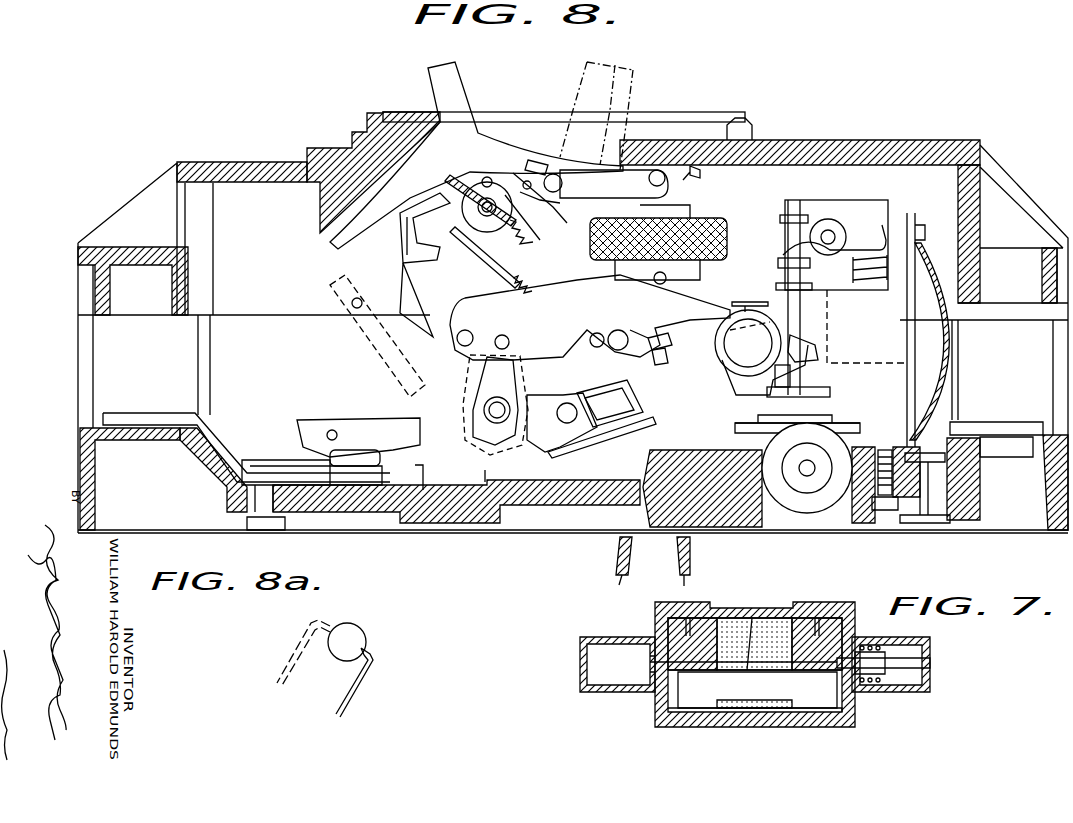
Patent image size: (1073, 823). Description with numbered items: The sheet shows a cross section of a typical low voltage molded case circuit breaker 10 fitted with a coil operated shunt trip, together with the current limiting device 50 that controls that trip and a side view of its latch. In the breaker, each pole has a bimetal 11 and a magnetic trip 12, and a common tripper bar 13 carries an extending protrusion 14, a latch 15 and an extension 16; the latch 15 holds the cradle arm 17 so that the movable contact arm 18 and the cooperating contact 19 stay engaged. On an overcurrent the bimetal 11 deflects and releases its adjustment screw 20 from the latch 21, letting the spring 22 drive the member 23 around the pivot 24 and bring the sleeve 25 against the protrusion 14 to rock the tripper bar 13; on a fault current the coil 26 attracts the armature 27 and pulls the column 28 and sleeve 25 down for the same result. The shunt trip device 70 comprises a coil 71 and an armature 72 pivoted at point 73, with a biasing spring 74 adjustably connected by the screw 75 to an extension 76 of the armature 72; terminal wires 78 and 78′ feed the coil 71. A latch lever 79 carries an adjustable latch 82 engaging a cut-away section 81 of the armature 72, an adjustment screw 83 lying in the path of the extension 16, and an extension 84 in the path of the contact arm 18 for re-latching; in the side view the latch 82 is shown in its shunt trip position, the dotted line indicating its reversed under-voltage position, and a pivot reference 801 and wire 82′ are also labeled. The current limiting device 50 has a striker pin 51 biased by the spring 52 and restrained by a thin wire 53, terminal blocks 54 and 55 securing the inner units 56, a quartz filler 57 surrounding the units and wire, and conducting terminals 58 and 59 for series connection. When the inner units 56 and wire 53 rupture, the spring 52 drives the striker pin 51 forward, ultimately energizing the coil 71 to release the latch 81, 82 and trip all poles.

In FIG. 8, the molded case circuit breaker 10 is at (352, 118).
In FIG. 8, the bimetal 11 is at (908, 331).
In FIG. 8, the magnetic trip 12 is at (806, 408).
In FIG. 8, the common tripper bar 13 is at (760, 318).
In FIG. 8, the extending protrusion 14 is at (815, 347).
In FIG. 8, the latch 15 is at (740, 301).
In FIG. 8, the extension 16 is at (678, 345).
In FIG. 8, the cradle arm 17 is at (690, 302).
In FIG. 8, the movable contact arm 18 is at (350, 428).
In FIG. 8, the cooperating contact 19 is at (372, 457).
In FIG. 8, the adjustment screw 20 is at (909, 224).
In FIG. 8, the latch 21 is at (836, 240).
In FIG. 8, the spring 22 is at (872, 283).
In FIG. 8, the member 23 is at (862, 240).
In FIG. 8, the pivot 24 is at (832, 230).
In FIG. 8, the sleeve 25 is at (810, 321).
In FIG. 8, the coil 26 is at (811, 508).
In FIG. 8, the armature 27 is at (822, 393).
In FIG. 8, the column 28 is at (791, 368).
In FIG. 8, the shunt trip device 70 is at (528, 181).
In FIG. 8, the coil 71 is at (715, 217).
In FIG. 8, the armature 72 is at (586, 191).
In FIG. 8, the pivot 73 is at (560, 176).
In FIG. 8, the biasing spring 74 is at (536, 208).
In FIG. 8, the screw 75 is at (468, 178).
In FIG. 8, the extension 76 is at (492, 220).
In FIG. 8, the latch lever 79 is at (492, 262).
In FIG. 8, the extension 84 is at (512, 286).
In FIG. 8, the adjustable latch 82 is at (458, 225).
In FIG. 8A, the adjustable latch 82 is at (360, 688).
In FIG. 8, the pin 801 is at (627, 333).
In FIG. 8, the adjustment screw 83 is at (661, 366).
In FIG. 8, the terminal wire 78 is at (692, 553).
In FIG. 8, the terminal wire 78′ is at (622, 550).
In FIG. 8A, the cut-away section 81 is at (358, 635).
In FIG. 8A, the wire 82′ is at (290, 644).
In FIG. 7, the current limiting device 50 is at (799, 593).
In FIG. 7, the striker pin 51 is at (932, 664).
In FIG. 7, the spring 52 is at (872, 683).
In FIG. 7, the thin wire 53 is at (750, 617).
In FIG. 7, the terminal block 54 is at (678, 727).
In FIG. 7, the terminal block 55 is at (845, 727).
In FIG. 7, the inner unit 56 is at (757, 712).
In FIG. 7, the quartz filler 57 is at (788, 712).
In FIG. 7, the conducting terminal 58 is at (630, 637).
In FIG. 7, the conducting terminal 59 is at (932, 641).